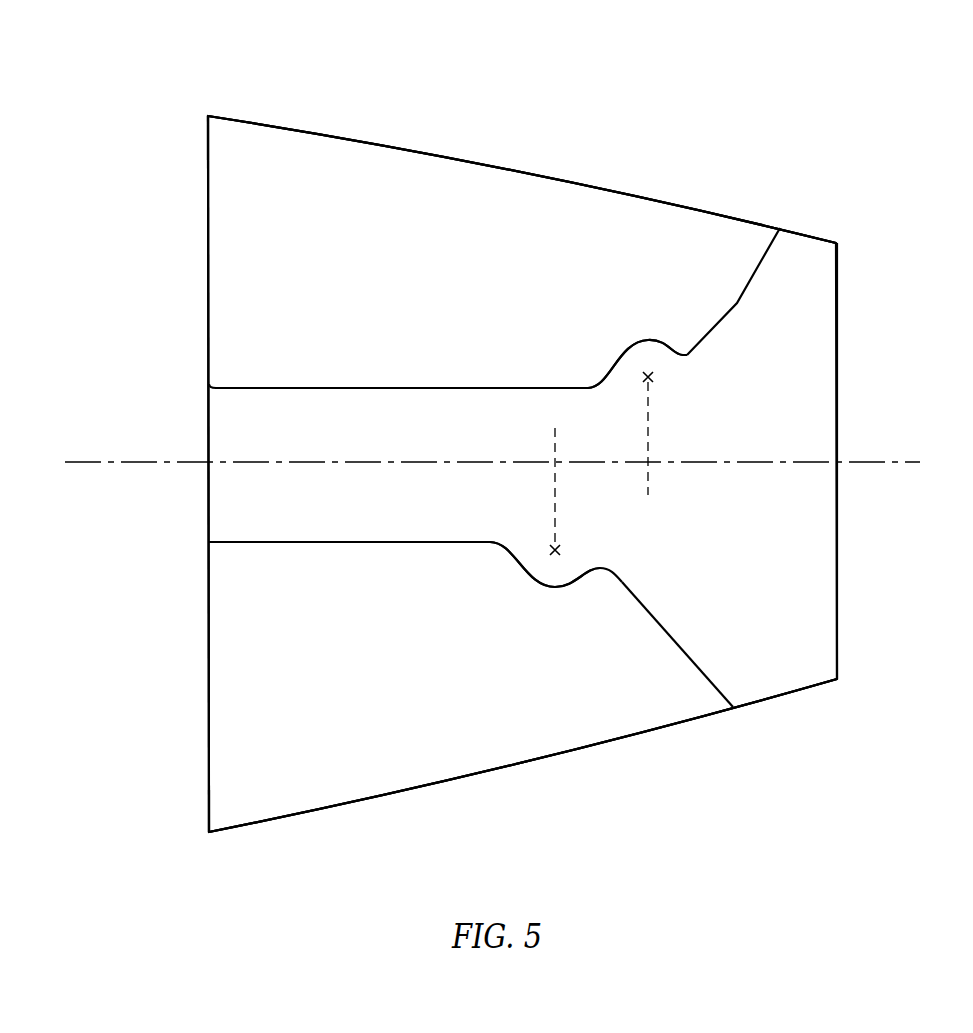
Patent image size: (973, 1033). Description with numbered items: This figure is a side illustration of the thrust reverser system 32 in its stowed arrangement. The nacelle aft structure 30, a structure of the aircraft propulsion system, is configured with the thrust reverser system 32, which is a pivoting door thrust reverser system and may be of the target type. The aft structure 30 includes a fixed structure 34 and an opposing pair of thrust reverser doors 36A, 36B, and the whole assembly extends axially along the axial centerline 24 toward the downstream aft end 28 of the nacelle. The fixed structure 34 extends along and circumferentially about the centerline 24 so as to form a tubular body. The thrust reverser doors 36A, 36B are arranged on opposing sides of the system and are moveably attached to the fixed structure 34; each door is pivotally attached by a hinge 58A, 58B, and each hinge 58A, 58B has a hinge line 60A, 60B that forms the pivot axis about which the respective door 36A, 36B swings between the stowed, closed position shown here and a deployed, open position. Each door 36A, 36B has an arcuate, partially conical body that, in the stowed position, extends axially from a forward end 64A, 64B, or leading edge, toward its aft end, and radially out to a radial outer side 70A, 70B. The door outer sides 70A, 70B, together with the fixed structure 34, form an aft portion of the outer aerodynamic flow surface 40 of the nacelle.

The axial centerline 24 is at (72, 465).
The aft end 28 is at (838, 265).
The nacelle aft structure 30 is at (152, 98).
The thrust reverser system 32 is at (708, 163).
The fixed structure 34 is at (208, 420).
The thrust reverser door 36A is at (518, 172).
The thrust reverser door 36B is at (472, 777).
The outer aerodynamic flow surface 40 is at (271, 524).
The hinge 58A is at (601, 358).
The hinge 58B is at (511, 567).
The hinge line 60A is at (653, 377).
The hinge line 60B is at (560, 550).
The forward end 64A is at (208, 115).
The forward end 64B is at (209, 833).
The radial outer side 70A is at (363, 158).
The radial outer side 70B is at (335, 793).